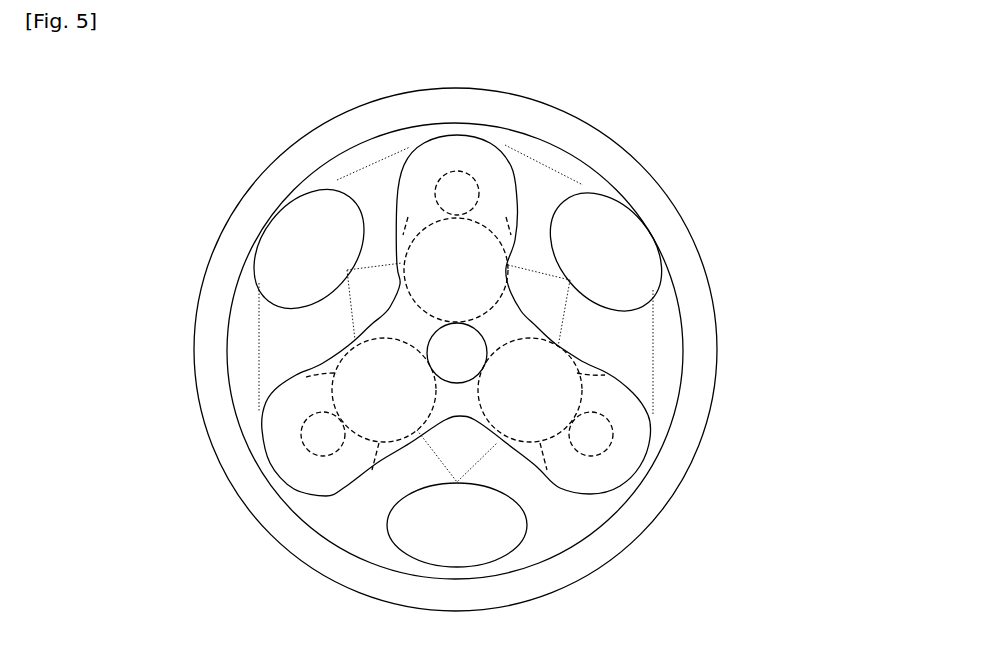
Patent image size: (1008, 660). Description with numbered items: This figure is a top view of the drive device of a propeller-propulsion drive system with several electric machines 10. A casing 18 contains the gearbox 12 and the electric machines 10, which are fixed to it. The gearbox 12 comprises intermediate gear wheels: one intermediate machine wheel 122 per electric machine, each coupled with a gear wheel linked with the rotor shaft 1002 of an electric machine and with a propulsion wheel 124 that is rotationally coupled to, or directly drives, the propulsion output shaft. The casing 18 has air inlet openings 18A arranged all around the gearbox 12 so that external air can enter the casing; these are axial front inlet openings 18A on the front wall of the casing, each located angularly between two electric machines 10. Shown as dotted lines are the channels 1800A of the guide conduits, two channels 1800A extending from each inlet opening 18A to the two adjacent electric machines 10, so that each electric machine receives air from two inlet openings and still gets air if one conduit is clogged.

The electric machine 10 is at (415, 182).
The gearbox 12 is at (470, 408).
The casing 18 is at (690, 425).
The air inlet opening 18A is at (305, 233).
The intermediate machine wheel 122 is at (360, 345).
The propulsion wheel 124 is at (462, 353).
The rotor shaft 1002 is at (471, 192).
The channel 1800A is at (523, 168).